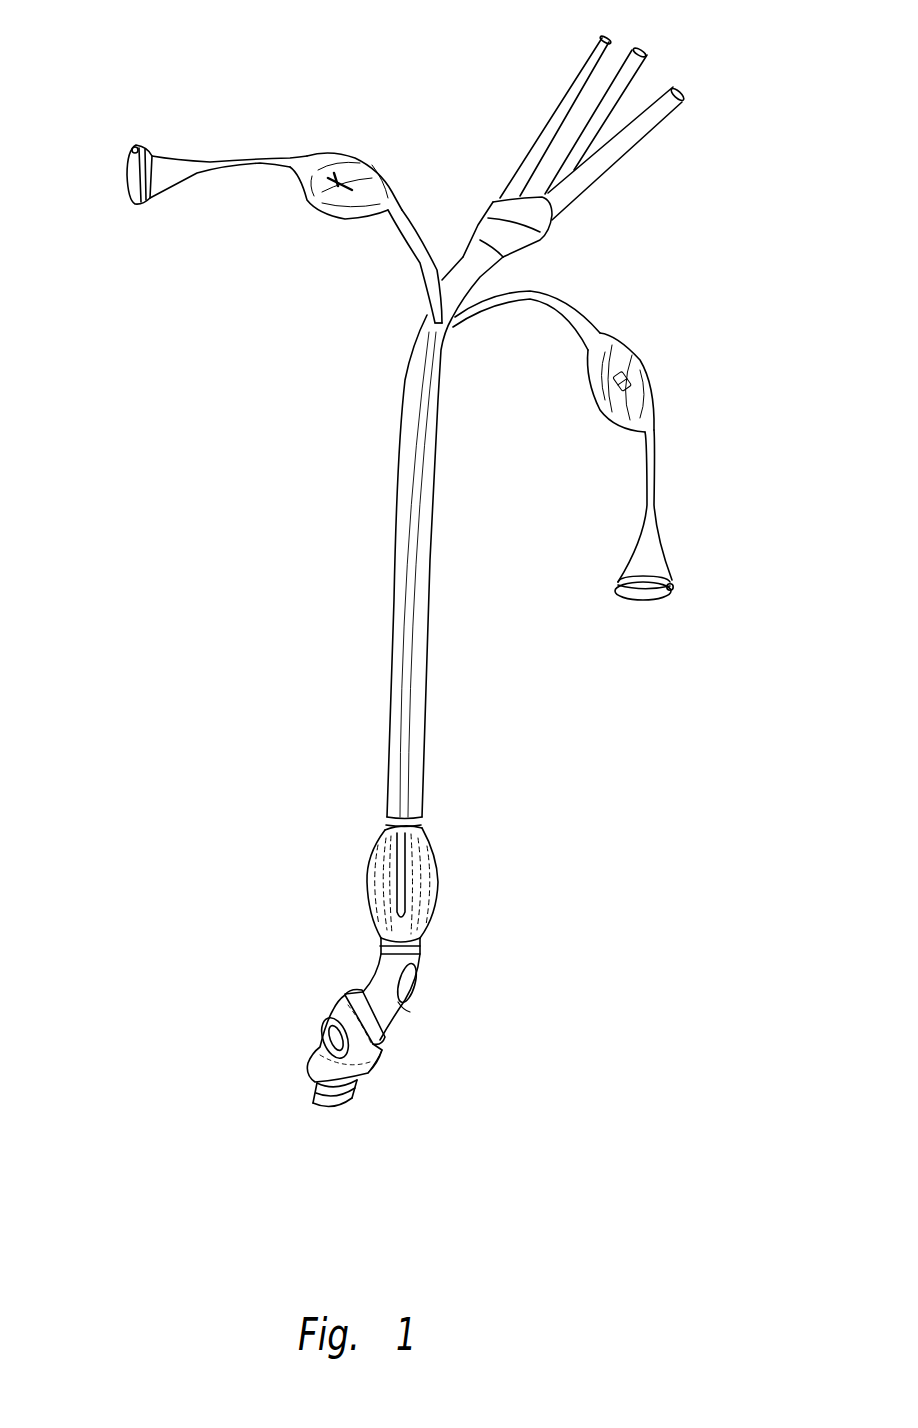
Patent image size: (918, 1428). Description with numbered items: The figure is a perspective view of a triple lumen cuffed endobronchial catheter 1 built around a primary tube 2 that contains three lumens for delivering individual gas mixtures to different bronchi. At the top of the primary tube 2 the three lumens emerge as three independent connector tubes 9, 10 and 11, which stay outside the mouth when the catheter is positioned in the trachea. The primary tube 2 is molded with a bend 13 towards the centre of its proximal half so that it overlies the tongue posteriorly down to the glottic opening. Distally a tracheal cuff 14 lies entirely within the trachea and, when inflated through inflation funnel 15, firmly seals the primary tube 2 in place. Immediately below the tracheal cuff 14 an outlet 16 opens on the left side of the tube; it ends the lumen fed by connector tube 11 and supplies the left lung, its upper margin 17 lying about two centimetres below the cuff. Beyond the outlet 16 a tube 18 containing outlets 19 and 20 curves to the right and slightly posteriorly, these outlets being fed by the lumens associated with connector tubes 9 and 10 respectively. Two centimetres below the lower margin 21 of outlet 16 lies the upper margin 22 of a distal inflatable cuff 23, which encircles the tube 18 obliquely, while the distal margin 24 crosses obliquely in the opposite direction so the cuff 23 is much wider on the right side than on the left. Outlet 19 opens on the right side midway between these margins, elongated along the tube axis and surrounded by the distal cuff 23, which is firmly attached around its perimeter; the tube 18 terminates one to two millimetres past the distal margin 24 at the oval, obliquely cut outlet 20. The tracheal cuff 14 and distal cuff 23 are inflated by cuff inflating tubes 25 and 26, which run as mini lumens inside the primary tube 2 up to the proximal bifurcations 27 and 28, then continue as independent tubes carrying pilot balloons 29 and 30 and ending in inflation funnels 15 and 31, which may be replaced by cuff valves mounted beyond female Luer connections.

The triple lumen cuffed endobronchial catheter 1 is at (272, 587).
The primary tube 2 is at (397, 455).
The connector tube 9 is at (577, 70).
The connector tube 10 is at (573, 122).
The connector tube 11 is at (620, 161).
The bend 13 is at (405, 363).
The tracheal cuff 14 is at (440, 884).
The inflation funnel 15 is at (126, 182).
The outlet 16 is at (413, 984).
The upper margin 17 is at (417, 963).
The tube 18 is at (364, 992).
The outlet 19 is at (326, 1035).
The outlet 20 is at (323, 1105).
The lower margin 21 is at (402, 1005).
The upper margin 22 is at (383, 1042).
The distal inflatable cuff 23 is at (382, 1065).
The distal margin 24 is at (315, 1084).
The cuff inflating tube 25 is at (415, 247).
The cuff inflating tube 26 is at (563, 321).
The proximal bifurcation 27 is at (424, 317).
The proximal bifurcation 28 is at (457, 316).
The pilot balloon 29 is at (347, 153).
The pilot balloon 30 is at (657, 362).
The inflation funnel 31 is at (639, 601).